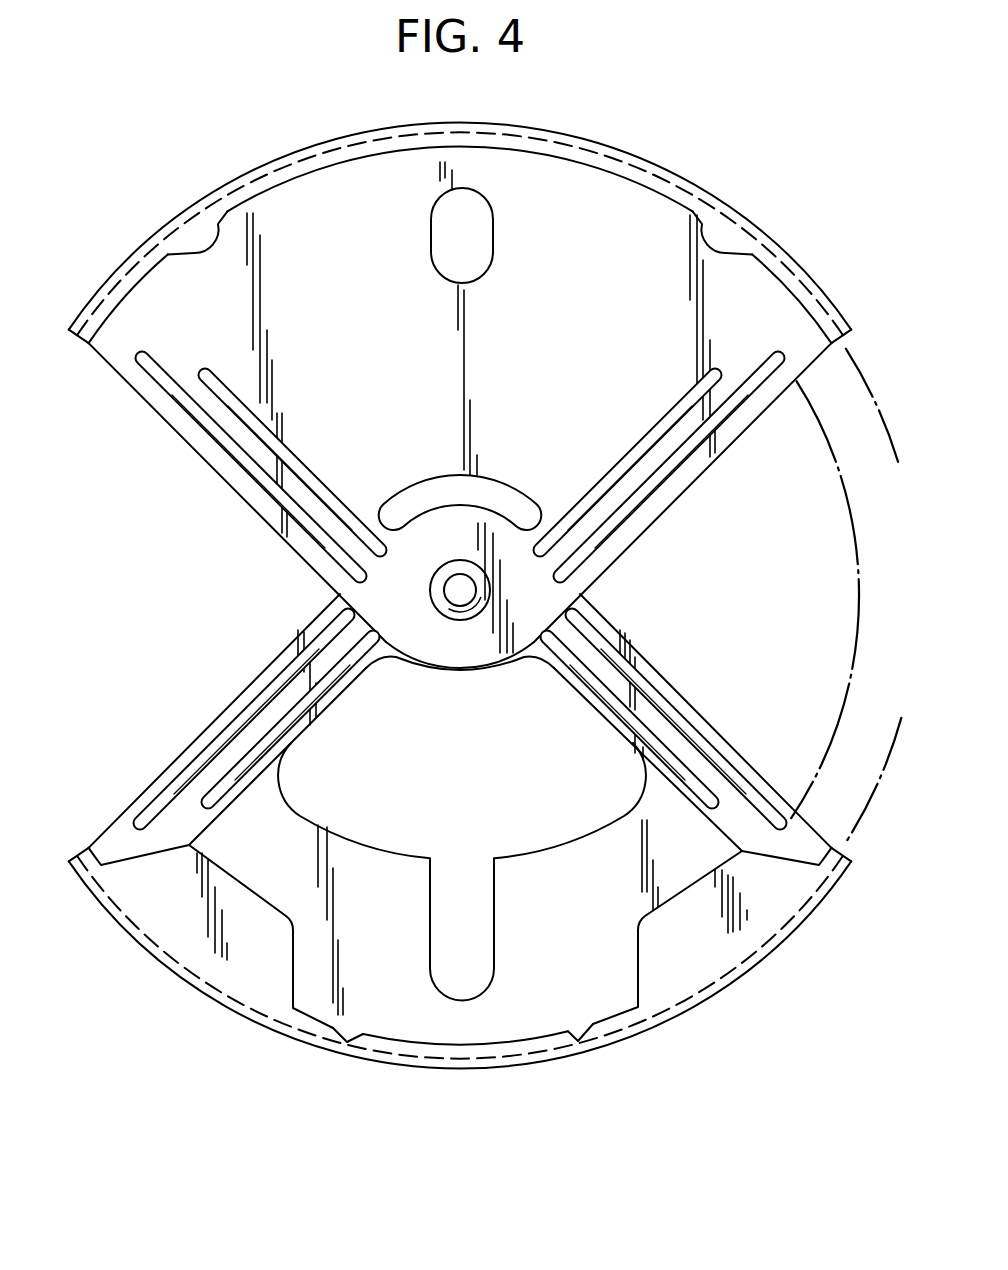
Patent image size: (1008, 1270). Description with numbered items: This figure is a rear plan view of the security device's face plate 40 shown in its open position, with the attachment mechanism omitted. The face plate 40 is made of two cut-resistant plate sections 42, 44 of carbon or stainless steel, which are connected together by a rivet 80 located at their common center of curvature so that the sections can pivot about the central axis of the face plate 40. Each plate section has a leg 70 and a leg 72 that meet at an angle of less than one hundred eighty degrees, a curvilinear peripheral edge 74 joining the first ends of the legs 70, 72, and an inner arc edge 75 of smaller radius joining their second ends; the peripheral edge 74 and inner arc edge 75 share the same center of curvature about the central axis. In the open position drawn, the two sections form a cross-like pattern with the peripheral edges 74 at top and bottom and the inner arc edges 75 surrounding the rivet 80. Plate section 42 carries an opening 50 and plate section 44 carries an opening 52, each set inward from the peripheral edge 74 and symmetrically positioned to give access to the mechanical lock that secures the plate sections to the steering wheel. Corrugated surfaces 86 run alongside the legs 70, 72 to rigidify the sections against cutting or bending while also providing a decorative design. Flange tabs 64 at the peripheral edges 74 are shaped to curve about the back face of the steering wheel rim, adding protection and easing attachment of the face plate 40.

The face plate 40 is at (353, 113).
The plate section 42 is at (672, 663).
The plate section 44 is at (705, 501).
The opening 50 is at (403, 835).
The opening 52 is at (483, 249).
The flange tab 64 is at (205, 228).
The leg 70 is at (205, 718).
The leg 72 is at (253, 510).
The peripheral edge 74 is at (543, 170).
The inner arc edge 75 is at (510, 497).
The rivet 80 is at (461, 588).
The corrugated surface 86 is at (245, 417).